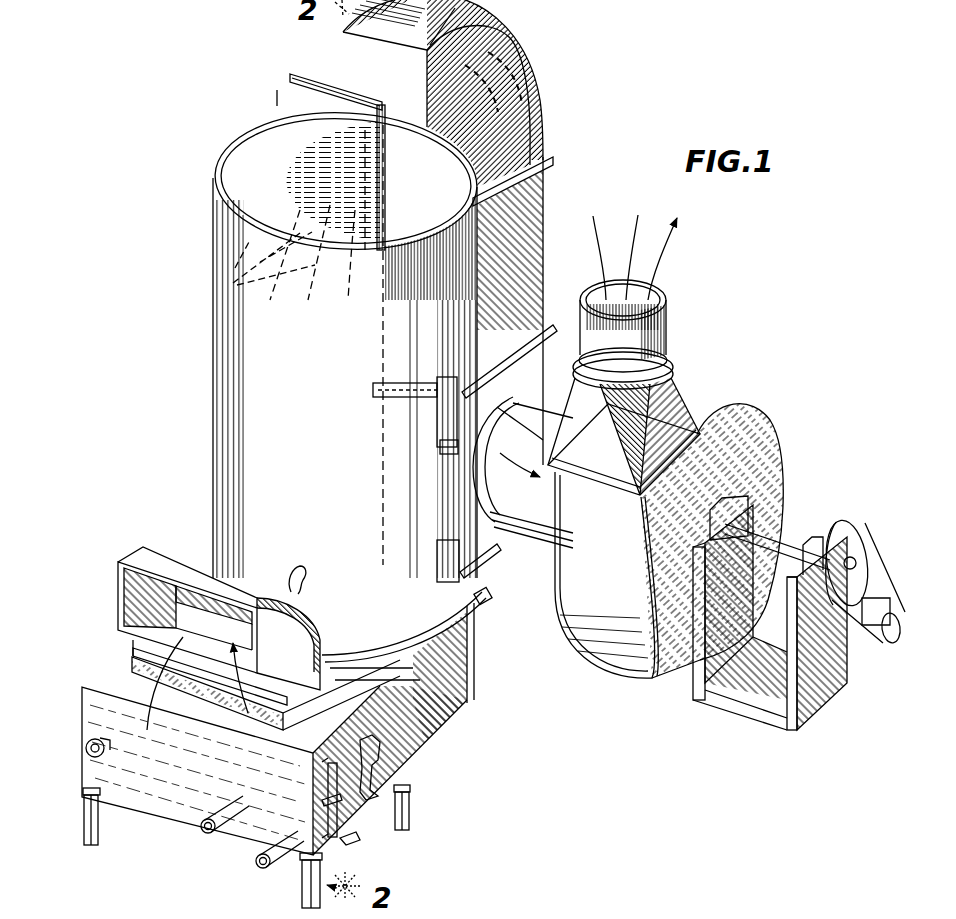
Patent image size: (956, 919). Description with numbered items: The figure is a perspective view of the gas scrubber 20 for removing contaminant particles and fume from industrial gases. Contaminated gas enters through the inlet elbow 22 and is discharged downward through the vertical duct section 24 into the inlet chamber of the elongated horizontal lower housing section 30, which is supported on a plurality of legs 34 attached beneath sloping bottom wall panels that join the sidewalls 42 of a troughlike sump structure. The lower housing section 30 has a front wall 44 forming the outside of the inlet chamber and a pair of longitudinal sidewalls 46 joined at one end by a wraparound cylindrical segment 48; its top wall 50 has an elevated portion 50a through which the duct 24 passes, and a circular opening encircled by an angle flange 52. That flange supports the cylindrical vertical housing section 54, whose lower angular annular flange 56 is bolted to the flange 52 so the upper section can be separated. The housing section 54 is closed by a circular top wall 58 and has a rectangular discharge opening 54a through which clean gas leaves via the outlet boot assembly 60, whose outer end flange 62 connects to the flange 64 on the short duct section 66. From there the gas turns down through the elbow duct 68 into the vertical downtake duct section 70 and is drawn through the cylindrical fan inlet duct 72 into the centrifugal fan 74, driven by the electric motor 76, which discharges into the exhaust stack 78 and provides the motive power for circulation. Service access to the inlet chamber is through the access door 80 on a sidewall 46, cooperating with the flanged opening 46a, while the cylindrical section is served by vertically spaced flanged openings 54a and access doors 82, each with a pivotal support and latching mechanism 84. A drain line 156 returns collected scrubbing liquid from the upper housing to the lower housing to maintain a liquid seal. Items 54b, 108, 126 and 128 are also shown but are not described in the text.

The gas scrubber 20 is at (580, 740).
The inlet elbow 22 is at (118, 585).
The vertical duct section 24 is at (110, 690).
The lower housing section 30 is at (446, 738).
The legs 34 is at (83, 818).
The sidewalls of troughlike structure 42 is at (350, 840).
The front wall 44 is at (178, 790).
The longitudinal sidewalls 46 is at (436, 712).
The flanged opening 46a is at (330, 760).
The wraparound cylindrical segment 48 is at (476, 656).
The top wall 50 is at (383, 680).
The elevated portion of top wall 50a is at (120, 658).
The angle flange 52 is at (396, 665).
The cylindrical housing section 54 is at (212, 384).
The flanged opening 54a is at (246, 295).
The tower mounting rods 54b is at (445, 378).
The angular annular flange 56 is at (400, 652).
The circular top wall 58 is at (226, 172).
The outlet boot assembly 60 is at (276, 98).
The outer end flange 62 is at (291, 78).
The flange 64 is at (292, 75).
The short duct section 66 is at (455, 22).
The elbow duct 68 is at (513, 55).
The vertical downtake duct section 70 is at (541, 226).
The cylindrical fan inlet duct 72 is at (546, 407).
The centrifugal fan 74 is at (770, 450).
The electric motor 76 is at (860, 650).
The exhaust stack 78 is at (661, 327).
The access door 80 is at (360, 803).
The access doors 82 is at (445, 450).
The pivotal support and latching mechanism 84 is at (476, 356).
The knob 108 is at (85, 746).
The pipe 126 is at (203, 853).
The pipe 128 is at (258, 878).
The drain line 156 is at (303, 586).